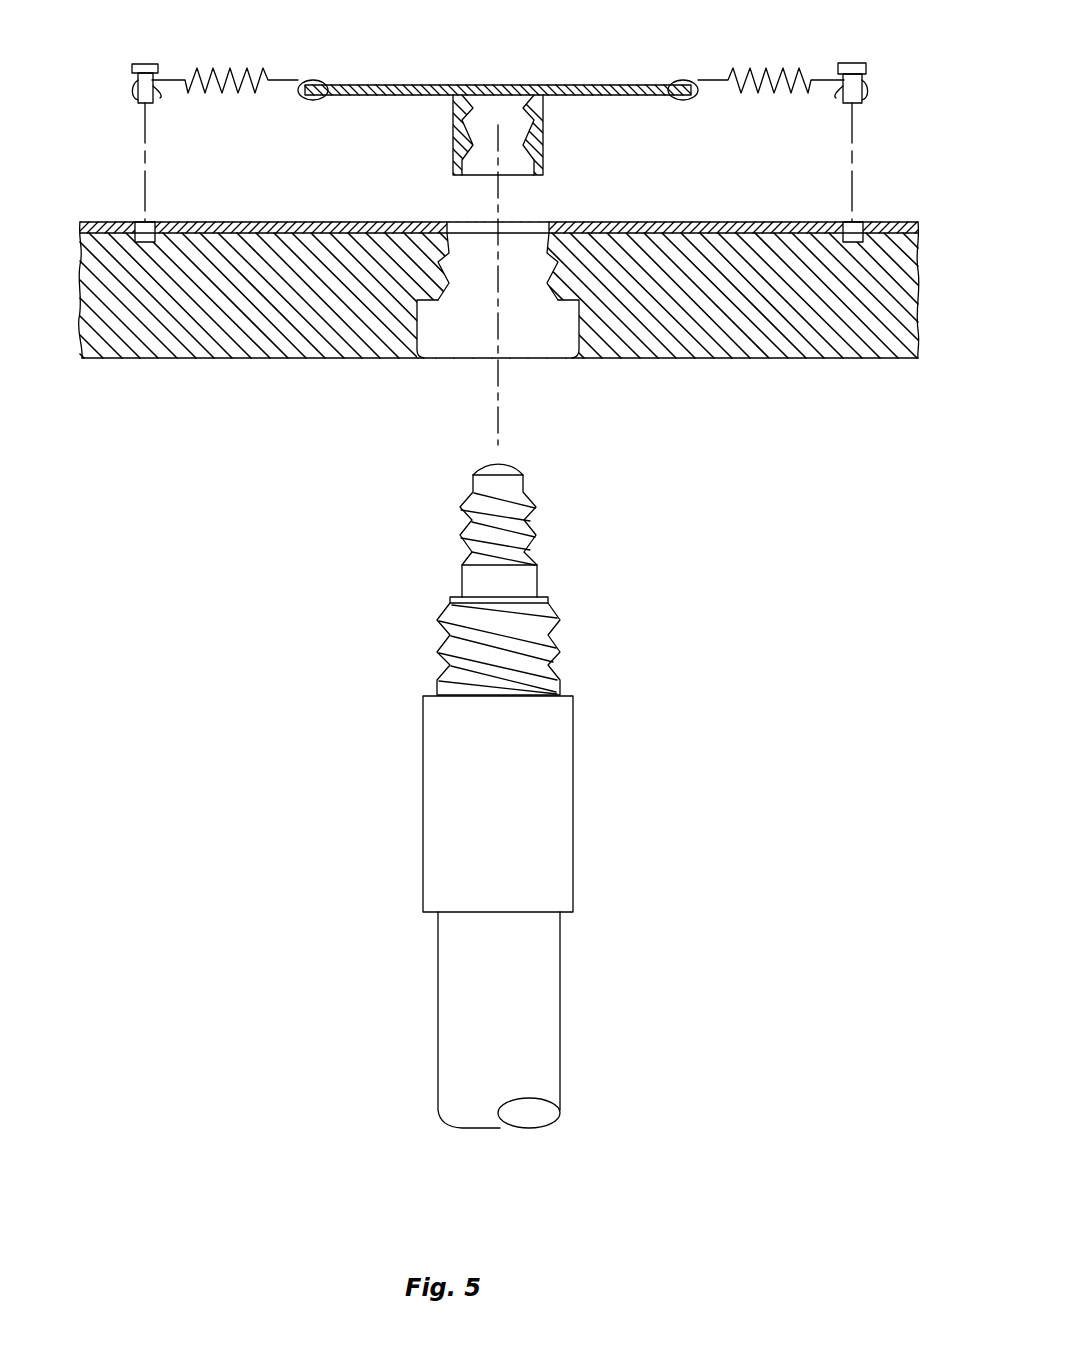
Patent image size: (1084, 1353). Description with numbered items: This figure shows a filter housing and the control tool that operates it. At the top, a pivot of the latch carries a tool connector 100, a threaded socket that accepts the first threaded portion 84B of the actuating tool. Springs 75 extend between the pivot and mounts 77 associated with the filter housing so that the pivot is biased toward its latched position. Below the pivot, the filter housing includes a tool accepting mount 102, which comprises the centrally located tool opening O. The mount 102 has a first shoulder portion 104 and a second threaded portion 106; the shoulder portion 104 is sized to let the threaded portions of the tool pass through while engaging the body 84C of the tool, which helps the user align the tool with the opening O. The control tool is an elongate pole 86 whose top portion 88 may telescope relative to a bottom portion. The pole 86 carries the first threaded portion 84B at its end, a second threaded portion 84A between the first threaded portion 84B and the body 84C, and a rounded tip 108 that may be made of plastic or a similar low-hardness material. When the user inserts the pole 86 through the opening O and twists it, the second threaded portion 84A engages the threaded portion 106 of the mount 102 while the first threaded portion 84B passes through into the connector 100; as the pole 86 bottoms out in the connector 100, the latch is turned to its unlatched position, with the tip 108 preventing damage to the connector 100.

The spring 75 is at (243, 68).
The mount 77 is at (875, 107).
The tool connector 100 is at (453, 128).
The tool accepting mount 102 is at (499, 294).
The first shoulder portion 104 is at (577, 324).
The second threaded portion 106 is at (540, 243).
The tool opening O is at (446, 362).
The tip 108 is at (491, 462).
The first threaded portion 84B is at (550, 489).
The second threaded portion 84A is at (578, 647).
The body 84C is at (589, 797).
The top portion 88 is at (561, 990).
The pole 86 is at (558, 780).